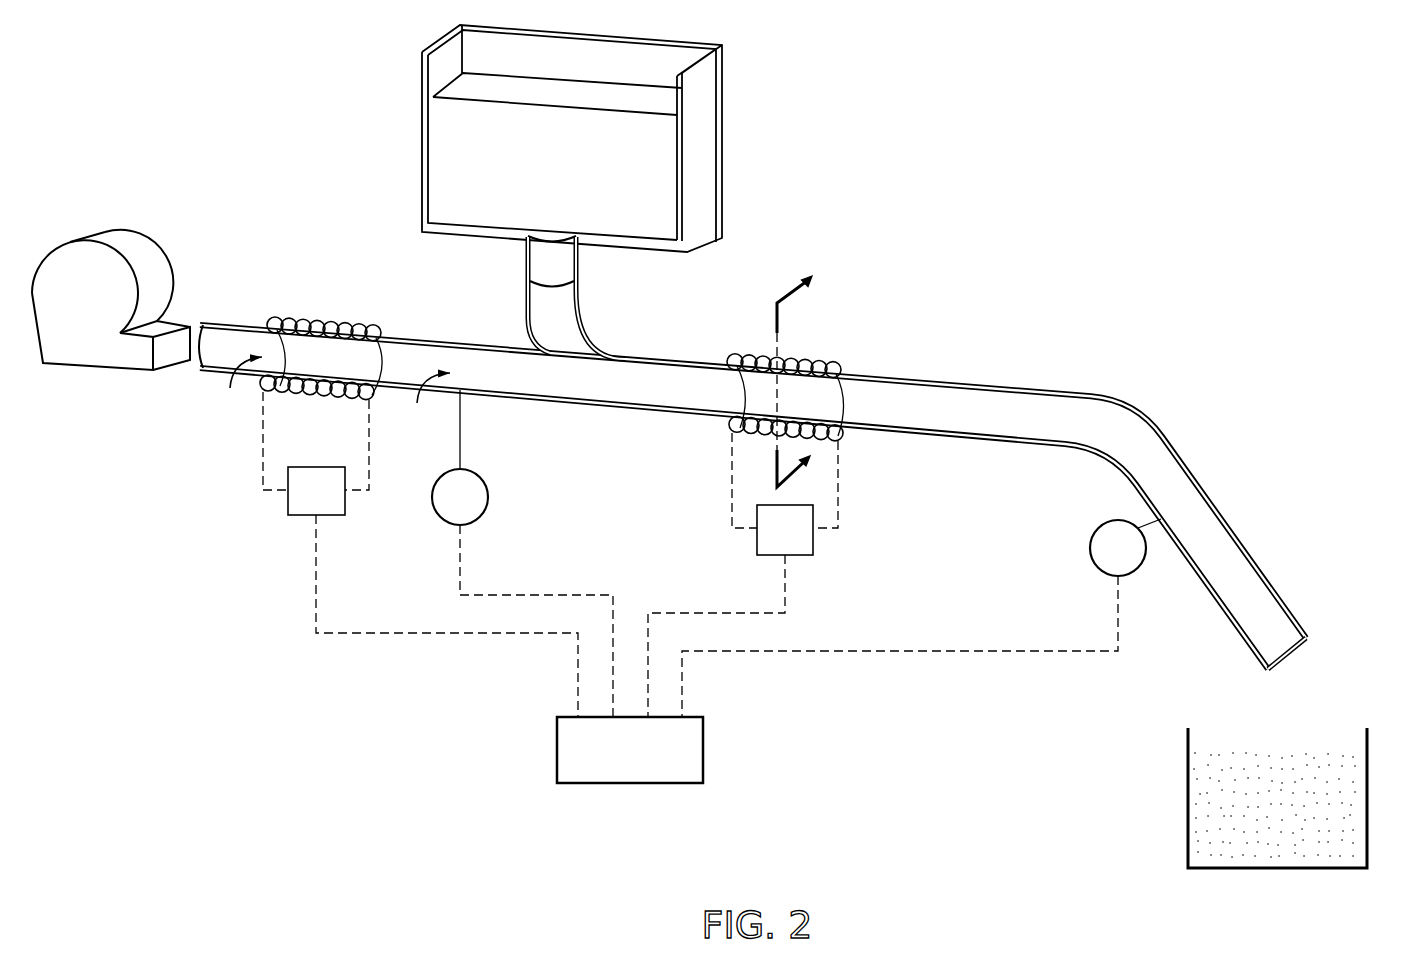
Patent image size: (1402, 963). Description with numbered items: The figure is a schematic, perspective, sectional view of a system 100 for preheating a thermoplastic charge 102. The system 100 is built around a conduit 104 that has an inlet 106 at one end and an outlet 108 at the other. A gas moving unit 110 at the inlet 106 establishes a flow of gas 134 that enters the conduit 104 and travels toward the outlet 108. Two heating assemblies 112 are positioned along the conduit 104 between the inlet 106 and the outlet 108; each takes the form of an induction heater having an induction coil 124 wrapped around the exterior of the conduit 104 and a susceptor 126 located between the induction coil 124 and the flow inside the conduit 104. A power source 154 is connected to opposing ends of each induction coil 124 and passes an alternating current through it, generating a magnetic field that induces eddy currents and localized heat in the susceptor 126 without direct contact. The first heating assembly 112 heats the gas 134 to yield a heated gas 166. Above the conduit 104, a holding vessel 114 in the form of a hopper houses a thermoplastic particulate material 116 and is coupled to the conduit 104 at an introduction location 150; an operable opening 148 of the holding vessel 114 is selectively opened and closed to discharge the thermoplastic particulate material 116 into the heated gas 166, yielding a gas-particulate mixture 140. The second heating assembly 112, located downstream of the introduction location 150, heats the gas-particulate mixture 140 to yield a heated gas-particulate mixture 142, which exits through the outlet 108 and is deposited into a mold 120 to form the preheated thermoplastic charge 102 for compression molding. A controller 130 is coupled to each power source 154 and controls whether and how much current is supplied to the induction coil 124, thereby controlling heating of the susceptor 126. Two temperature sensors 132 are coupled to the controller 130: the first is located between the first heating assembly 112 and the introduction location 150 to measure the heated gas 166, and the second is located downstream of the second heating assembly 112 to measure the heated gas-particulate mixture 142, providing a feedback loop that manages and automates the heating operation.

The system 100 is at (1092, 160).
The thermoplastic charge 102 is at (1218, 737).
The conduit 104 is at (997, 388).
The inlet 106 is at (201, 369).
The outlet 108 is at (1293, 660).
The gas moving unit 110 is at (116, 232).
The heating assembly 112 is at (550, 491).
The holding vessel 114 is at (722, 82).
The thermoplastic particulate material 116 is at (624, 196).
The mold 120 is at (1188, 799).
The induction coil 124 is at (300, 318).
The susceptor 126 is at (310, 349).
The controller 130 is at (630, 785).
The temperature sensor 132 is at (488, 497).
The gas 134 is at (237, 387).
The gas-particulate mixture 140 is at (617, 375).
The heated gas-particulate mixture 142 is at (1227, 558).
The operable opening 148 is at (556, 234).
The introduction location 150 is at (625, 350).
The power source 154 is at (288, 503).
The heated gas 166 is at (424, 402).